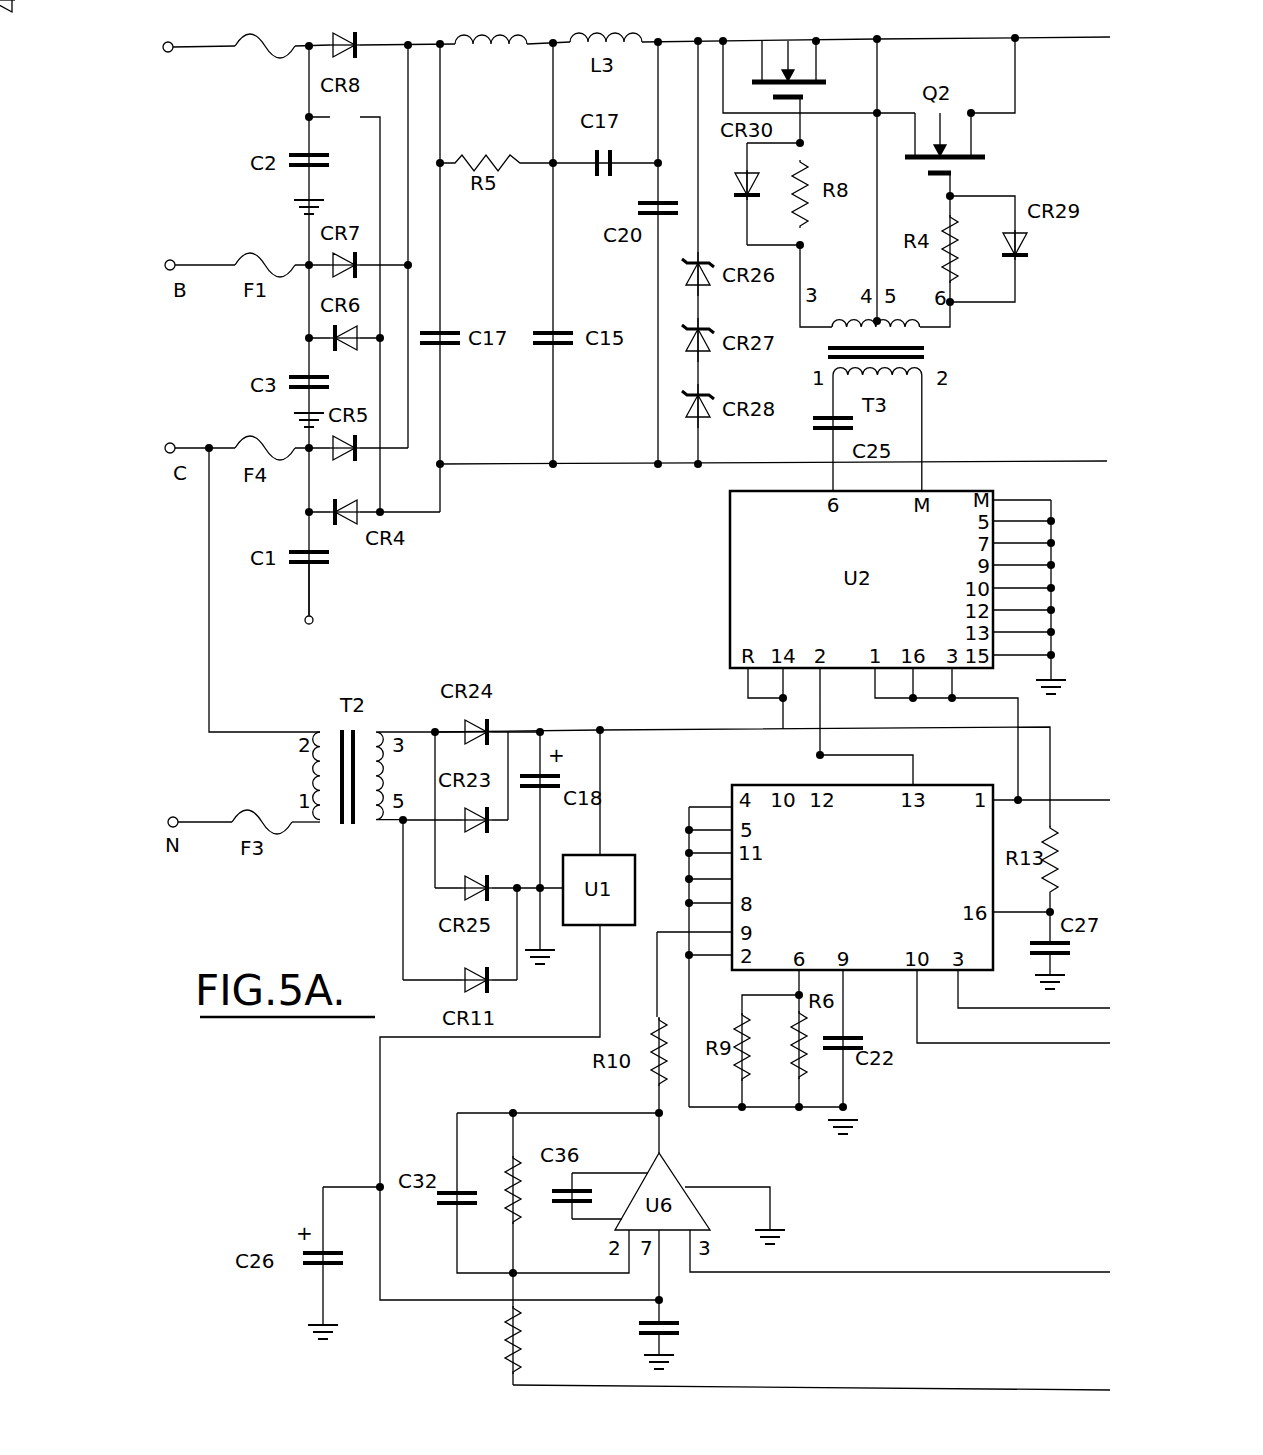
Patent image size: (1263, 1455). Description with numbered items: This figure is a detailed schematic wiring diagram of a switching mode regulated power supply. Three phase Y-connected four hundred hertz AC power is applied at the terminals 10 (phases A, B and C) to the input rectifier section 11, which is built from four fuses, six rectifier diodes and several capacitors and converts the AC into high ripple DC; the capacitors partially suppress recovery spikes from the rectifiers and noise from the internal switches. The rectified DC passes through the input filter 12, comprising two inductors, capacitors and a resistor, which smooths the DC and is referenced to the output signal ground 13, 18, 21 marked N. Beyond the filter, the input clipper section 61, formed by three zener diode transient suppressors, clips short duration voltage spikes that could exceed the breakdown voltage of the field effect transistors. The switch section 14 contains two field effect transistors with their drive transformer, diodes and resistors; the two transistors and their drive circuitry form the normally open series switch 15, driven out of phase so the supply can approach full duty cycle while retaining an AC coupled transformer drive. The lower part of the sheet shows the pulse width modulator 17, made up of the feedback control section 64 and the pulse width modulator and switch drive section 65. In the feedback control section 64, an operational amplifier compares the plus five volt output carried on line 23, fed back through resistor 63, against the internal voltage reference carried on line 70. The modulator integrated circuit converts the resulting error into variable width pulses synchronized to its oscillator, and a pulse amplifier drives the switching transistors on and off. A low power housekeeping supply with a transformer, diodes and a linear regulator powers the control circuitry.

The input 10 is at (229, 42).
The input rectifier section 11 is at (375, 29).
The input filter 12 is at (491, 38).
The input clipper section 61 is at (677, 232).
The switch section 14 is at (819, 71).
The normally open series switch 15 is at (991, 21).
The output signal ground 13 is at (386, 605).
The output signal ground 18 is at (386, 605).
The neutral terminal 21 is at (386, 605).
The pulse width modulator and switch drive section 65 is at (1066, 611).
The pulse width modulator section 17 is at (829, 863).
The line 70 is at (900, 1246).
The feedback control section 64 is at (663, 1299).
The resistor 63 is at (480, 1329).
The line 23 is at (811, 1363).